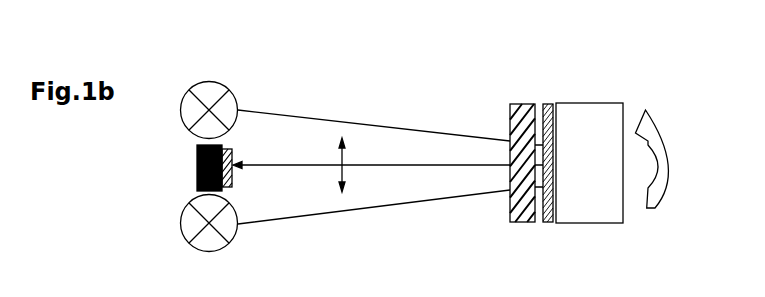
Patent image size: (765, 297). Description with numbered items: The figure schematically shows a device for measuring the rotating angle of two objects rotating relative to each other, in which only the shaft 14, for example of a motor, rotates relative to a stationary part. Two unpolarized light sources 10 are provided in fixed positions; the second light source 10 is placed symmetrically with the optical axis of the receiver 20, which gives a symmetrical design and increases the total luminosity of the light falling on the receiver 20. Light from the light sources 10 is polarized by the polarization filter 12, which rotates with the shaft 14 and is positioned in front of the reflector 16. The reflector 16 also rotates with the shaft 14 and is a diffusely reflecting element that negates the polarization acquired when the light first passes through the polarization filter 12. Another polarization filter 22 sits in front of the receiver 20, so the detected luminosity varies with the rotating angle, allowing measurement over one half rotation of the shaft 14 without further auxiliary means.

The light source 10 is at (180, 112).
The polarization filter 12 is at (515, 104).
The shaft 14 is at (598, 132).
The reflector 16 is at (547, 105).
The receiver 20 is at (197, 180).
The polarization filter 22 is at (228, 180).